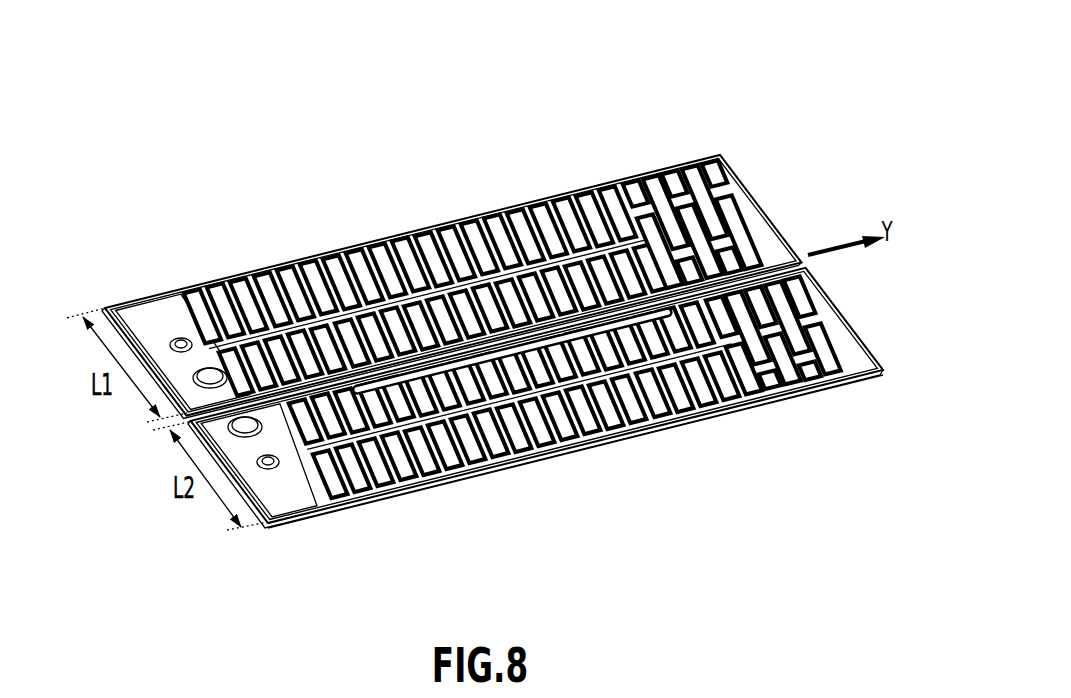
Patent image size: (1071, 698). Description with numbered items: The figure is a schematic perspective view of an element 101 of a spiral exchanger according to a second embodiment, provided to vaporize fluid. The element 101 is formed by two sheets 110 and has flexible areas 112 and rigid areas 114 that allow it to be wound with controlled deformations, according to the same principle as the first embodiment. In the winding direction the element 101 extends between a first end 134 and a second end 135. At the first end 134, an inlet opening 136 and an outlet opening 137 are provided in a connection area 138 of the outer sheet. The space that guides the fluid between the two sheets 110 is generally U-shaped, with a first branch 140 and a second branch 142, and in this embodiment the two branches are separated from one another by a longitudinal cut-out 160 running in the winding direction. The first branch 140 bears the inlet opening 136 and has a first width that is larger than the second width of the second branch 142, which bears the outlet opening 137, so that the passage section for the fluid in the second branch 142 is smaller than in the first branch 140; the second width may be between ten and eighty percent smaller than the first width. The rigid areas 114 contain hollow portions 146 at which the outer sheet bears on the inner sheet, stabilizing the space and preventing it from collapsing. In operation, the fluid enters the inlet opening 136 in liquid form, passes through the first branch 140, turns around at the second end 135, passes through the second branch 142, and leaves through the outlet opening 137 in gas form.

The element 101 is at (243, 224).
The sheets 110 is at (155, 318).
The flexible areas 112 is at (585, 452).
The rigid areas 114 is at (381, 226).
The first end 134 is at (106, 276).
The second end 135 is at (729, 130).
The inlet opening 136 is at (195, 378).
The outlet opening 137 is at (240, 428).
The connection area 138 is at (266, 542).
The first branch 140 is at (532, 258).
The second branch 142 is at (432, 440).
The hollow portions 146 is at (640, 185).
The longitudinal cut-out 160 is at (348, 380).